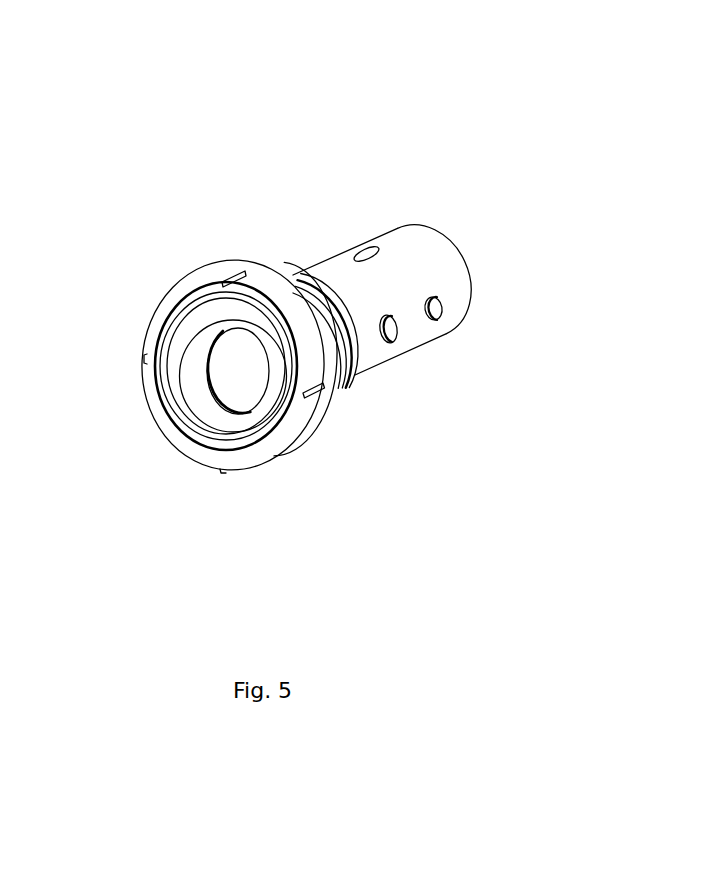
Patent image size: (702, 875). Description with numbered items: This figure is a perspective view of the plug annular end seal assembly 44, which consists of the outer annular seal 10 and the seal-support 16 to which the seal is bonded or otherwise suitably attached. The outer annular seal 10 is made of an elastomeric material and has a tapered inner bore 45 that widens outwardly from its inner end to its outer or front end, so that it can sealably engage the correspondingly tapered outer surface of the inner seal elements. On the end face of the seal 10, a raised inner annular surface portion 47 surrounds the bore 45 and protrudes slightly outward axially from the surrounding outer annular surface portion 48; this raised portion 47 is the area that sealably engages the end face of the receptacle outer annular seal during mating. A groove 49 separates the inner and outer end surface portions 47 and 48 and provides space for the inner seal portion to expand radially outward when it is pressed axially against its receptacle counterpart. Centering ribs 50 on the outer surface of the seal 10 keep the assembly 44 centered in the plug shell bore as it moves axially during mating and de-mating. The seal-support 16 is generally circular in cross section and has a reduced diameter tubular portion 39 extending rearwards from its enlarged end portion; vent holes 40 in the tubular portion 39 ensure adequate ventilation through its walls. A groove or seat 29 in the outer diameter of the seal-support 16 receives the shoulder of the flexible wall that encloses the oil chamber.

The outer annular seal 10 is at (210, 272).
The seal-support 16 is at (235, 263).
The groove or seat 29 is at (331, 290).
The reduced diameter tubular portion 39 is at (443, 272).
The vent holes 40 is at (440, 312).
The annular end seal assembly 44 is at (320, 327).
The tapered inner bore 45 is at (200, 387).
The raised inner annular surface portion 47 is at (172, 368).
The outer annular surface portion 48 is at (188, 293).
The groove 49 is at (223, 447).
The centering ribs 50 is at (225, 472).